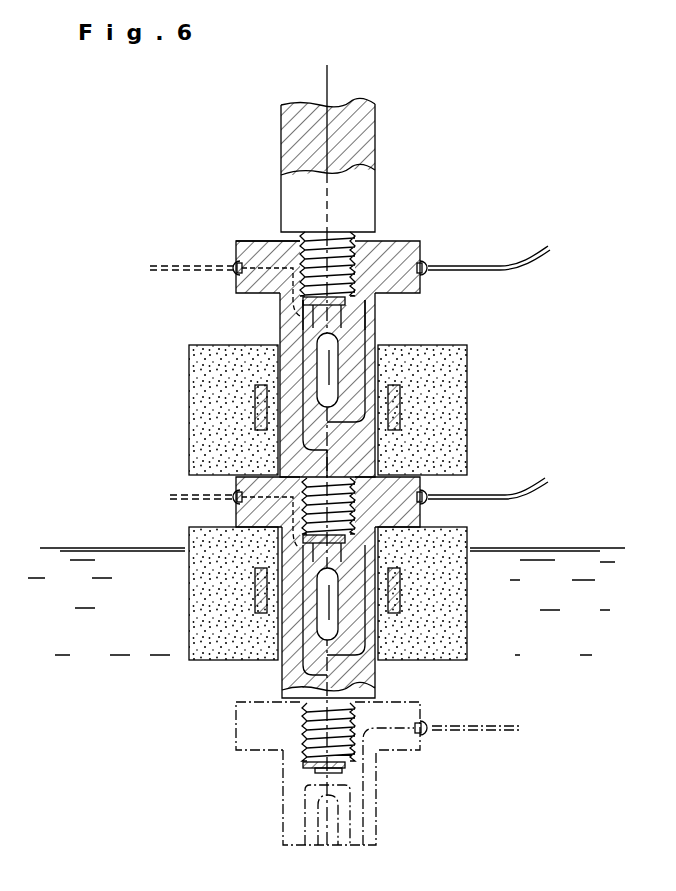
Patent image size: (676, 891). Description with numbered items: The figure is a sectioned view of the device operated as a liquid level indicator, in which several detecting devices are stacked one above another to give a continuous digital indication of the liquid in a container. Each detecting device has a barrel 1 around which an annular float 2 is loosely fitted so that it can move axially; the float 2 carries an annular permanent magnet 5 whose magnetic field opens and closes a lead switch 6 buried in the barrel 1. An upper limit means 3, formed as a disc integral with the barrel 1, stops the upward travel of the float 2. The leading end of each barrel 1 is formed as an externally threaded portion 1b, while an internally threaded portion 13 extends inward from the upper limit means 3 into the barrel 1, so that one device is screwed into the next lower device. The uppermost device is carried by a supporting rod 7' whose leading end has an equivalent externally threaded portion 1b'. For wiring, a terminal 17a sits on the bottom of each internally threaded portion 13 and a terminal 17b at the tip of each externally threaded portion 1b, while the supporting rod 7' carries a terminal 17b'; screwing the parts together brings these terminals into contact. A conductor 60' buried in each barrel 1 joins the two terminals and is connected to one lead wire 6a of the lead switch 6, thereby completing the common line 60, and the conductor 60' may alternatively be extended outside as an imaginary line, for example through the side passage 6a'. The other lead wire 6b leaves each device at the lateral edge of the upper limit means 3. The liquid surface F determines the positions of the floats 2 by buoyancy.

The common line 60 is at (355, 448).
The conductor 60' is at (298, 399).
The supporting rod 7' is at (350, 165).
The externally threaded portion 1b' is at (365, 238).
The externally threaded portion 1b is at (374, 661).
The upper limit means 3 is at (392, 252).
The internally threaded portion 13 is at (270, 243).
The barrel 1 is at (293, 365).
The terminal 17b' is at (260, 294).
The terminal 17b is at (289, 666).
The terminal 17a is at (312, 313).
The lead wire 6a is at (362, 316).
The lead switch 6 is at (333, 373).
The float 2 is at (440, 375).
The permanent magnet 5 is at (400, 410).
The side passage (dashed) 6a' is at (203, 371).
The lead wire 6b is at (537, 253).
The liquid surface F is at (324, 596).